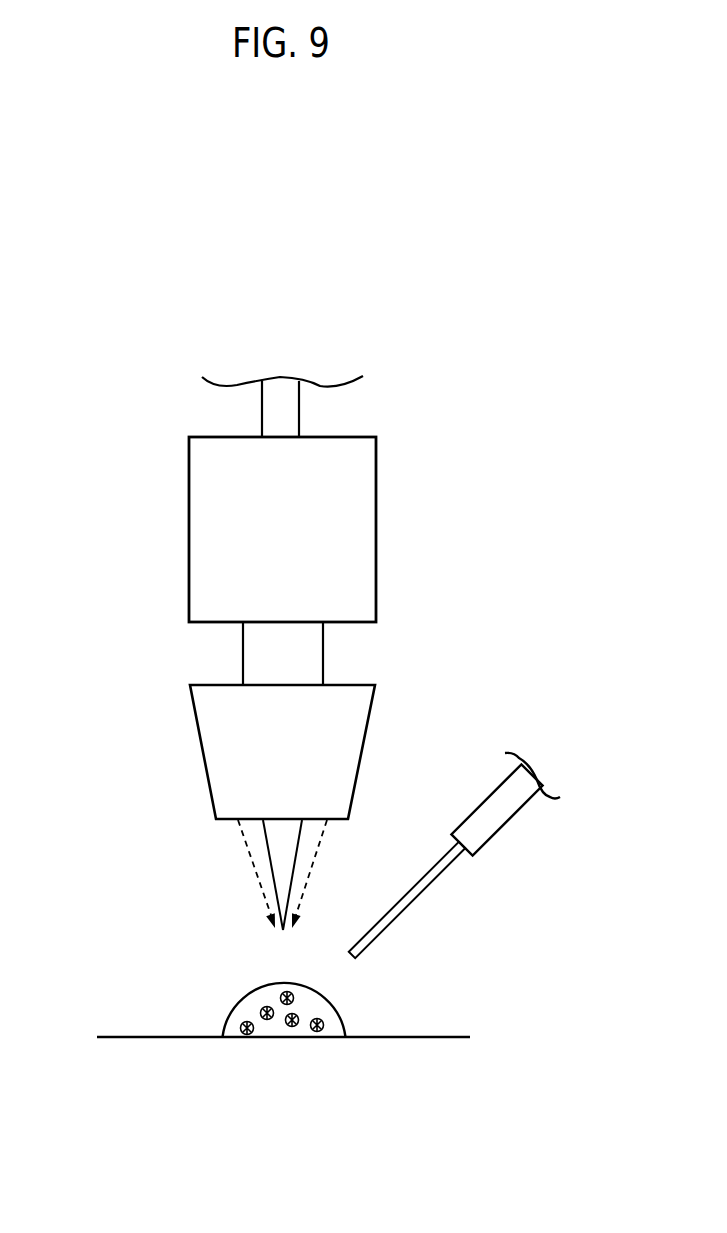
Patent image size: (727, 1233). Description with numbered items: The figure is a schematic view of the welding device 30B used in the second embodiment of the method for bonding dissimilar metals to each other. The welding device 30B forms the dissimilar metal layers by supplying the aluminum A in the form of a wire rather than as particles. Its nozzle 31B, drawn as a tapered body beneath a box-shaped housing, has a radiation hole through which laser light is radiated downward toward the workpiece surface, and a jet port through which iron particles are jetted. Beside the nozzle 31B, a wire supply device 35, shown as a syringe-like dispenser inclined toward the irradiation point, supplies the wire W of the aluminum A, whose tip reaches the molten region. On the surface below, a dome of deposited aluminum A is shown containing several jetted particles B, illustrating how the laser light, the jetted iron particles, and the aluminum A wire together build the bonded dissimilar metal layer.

The welding device 30B is at (446, 521).
The nozzle 31B is at (247, 748).
The wire supply device 35 is at (480, 786).
The wire W is at (367, 937).
The aluminum A is at (410, 900).
The particles B is at (263, 1007).